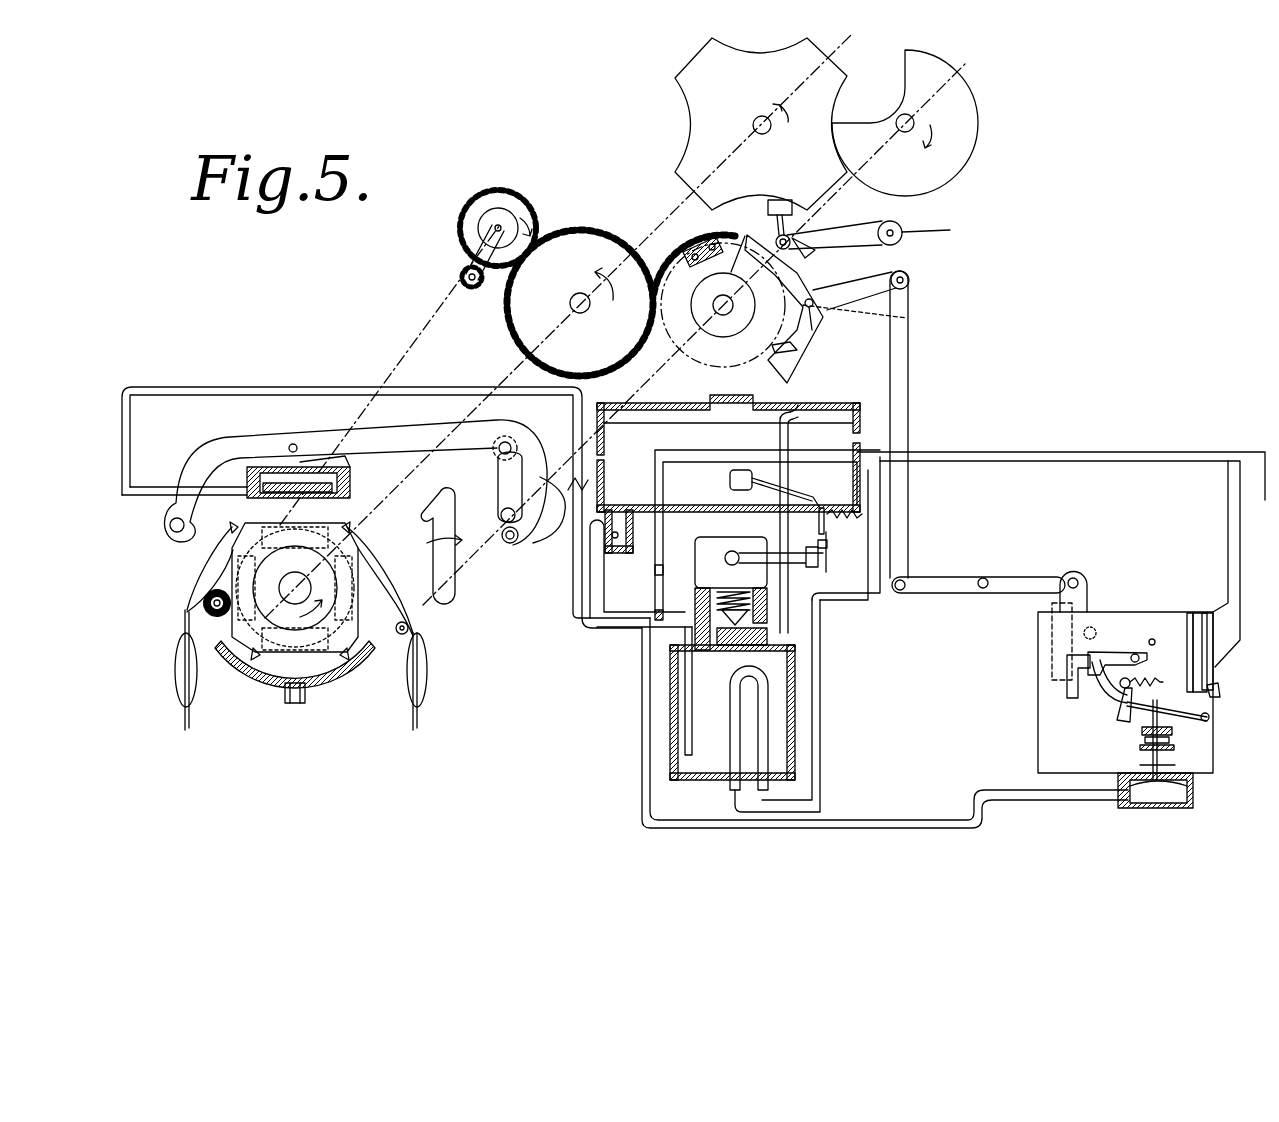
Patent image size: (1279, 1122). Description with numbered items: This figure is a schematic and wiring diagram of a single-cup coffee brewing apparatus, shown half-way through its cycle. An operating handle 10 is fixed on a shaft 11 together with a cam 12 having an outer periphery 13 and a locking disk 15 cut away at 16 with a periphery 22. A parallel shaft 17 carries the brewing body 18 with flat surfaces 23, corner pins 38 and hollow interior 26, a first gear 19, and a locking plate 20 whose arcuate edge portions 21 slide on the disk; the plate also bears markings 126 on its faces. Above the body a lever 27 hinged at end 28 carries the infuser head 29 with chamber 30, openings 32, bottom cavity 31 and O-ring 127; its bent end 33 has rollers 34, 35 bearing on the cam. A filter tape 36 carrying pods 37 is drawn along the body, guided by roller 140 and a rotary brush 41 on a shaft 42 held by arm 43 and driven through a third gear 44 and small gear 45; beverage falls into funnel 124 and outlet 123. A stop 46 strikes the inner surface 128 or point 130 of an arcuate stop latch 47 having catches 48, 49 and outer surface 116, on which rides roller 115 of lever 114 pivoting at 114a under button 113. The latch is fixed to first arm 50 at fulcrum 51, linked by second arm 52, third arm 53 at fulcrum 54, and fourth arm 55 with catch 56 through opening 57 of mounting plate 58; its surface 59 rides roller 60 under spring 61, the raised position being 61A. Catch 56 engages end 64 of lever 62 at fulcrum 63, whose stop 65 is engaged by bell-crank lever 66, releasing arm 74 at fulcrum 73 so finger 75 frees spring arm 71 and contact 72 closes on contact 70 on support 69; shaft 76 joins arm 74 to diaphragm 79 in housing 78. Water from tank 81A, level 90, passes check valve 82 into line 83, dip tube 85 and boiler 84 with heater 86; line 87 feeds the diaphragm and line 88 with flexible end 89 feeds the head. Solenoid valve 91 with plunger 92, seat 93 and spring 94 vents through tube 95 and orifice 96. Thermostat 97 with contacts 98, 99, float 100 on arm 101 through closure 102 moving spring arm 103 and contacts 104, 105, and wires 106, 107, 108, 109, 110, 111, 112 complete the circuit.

The operating handle 10 is at (462, 565).
The shaft 11 is at (500, 515).
The cam 12 is at (570, 480).
The outer periphery 13 is at (568, 525).
The locking disk 15 is at (972, 130).
The cut-away portion 16 is at (903, 66).
The shaft 17 is at (506, 385).
The brewing body 18 is at (350, 608).
The circular gear 19 is at (536, 278).
The locking plate 20 is at (681, 66).
The arcuate edge portions 21 is at (760, 193).
The periphery 22 is at (982, 168).
The peripheral flat surfaces 23 is at (362, 555).
The hollow interior 26 is at (266, 573).
The lever 27 is at (218, 443).
The hinged end 28 is at (170, 532).
The infuser head 29 is at (350, 470).
The internal chamber 30 is at (270, 470).
The bottom cavity 31 is at (262, 495).
The openings 32 is at (298, 448).
The end of lever 33 is at (498, 478).
The roller 34 is at (512, 440).
The roller 35 is at (513, 545).
The tape 36 is at (420, 712).
The pods 37 is at (430, 672).
The corner pins 38 is at (245, 662).
The rotary brush 41 is at (215, 615).
The shaft 42 is at (390, 385).
The arm 43 is at (468, 235).
The third circular gear 44 is at (522, 195).
The small gear 45 is at (462, 272).
The stop 46 is at (702, 250).
The stop latch 47 is at (810, 285).
The upper catch 48 is at (792, 300).
The lower catch 49 is at (772, 347).
The first arm 50 is at (845, 298).
The fulcrum 51 is at (814, 325).
The second arm 52 is at (910, 378).
The third arm 53 is at (952, 578).
The fulcrum 54 is at (990, 580).
The fourth arm 55 is at (1087, 598).
The catch 56 is at (1066, 680).
The opening 57 is at (1070, 698).
The mounting plate 58 is at (1038, 665).
The extended part 59 is at (1095, 625).
The roller 60 is at (1097, 632).
The spring 61 is at (1152, 625).
The raised position 61A is at (1050, 623).
The lever 62 is at (1150, 655).
The fulcrum 63 is at (1153, 638).
The end of lever 64 is at (1100, 700).
The stop 65 is at (1118, 725).
The L-shaped lever 66 is at (1120, 690).
The support 69 is at (1188, 612).
The electrical contact 70 is at (1193, 670).
The spring arm 71 is at (1213, 650).
The contact 72 is at (1220, 688).
The fulcrum point 73 is at (1210, 722).
The arm 74 is at (1160, 740).
The upstanding finger 75 is at (1212, 714).
The shaft 76 is at (1177, 766).
The housing 78 is at (1195, 800).
The flexible diaphragm 79 is at (1175, 808).
The water tank 81A is at (850, 405).
The check valve 82 is at (626, 555).
The water line 83 is at (590, 585).
The water boiler 84 is at (796, 700).
The dip tube 85 is at (693, 697).
The immersion heater 86 is at (735, 738).
The second water line 87 is at (680, 825).
The third water line 88 is at (584, 398).
The flexible upper end 89 is at (195, 485).
The maximum water level 90 is at (655, 420).
The solenoid valve 91 is at (700, 542).
The plunger 92 is at (715, 605).
The valve seat 93 is at (712, 648).
The conical spring 94 is at (700, 600).
The vent tube 95 is at (779, 444).
The flow restricting orifice 96 is at (798, 408).
The bimetal thermostat switch 97 is at (653, 598).
The fixed contact 98 is at (668, 566).
The contact 99 is at (654, 575).
The float 100 is at (729, 486).
The fulcrumed arm 101 is at (823, 500).
The flexible closure 102 is at (823, 505).
The spring arm 103 is at (827, 560).
The movable contact 104 is at (828, 548).
The second fixed contact 105 is at (822, 540).
The wire 106 is at (1190, 450).
The wire 107 is at (790, 490).
The wire 108 is at (822, 660).
The wire 109 is at (1145, 462).
The wire 110 is at (1240, 525).
The wire 111 is at (742, 550).
The wire 112 is at (760, 566).
The button 113 is at (768, 208).
The lever 114 is at (852, 225).
The pivot point 114a is at (945, 227).
The roller 115 is at (779, 254).
The outer surface 116 is at (820, 285).
The tubular outlet 123 is at (292, 704).
The funnel 124 is at (355, 685).
The cam face 126 is at (834, 193).
The rubber O-ring 127 is at (350, 475).
The inner surface 128 is at (717, 257).
The lower end contact point 130 is at (790, 345).
The roller 140 is at (402, 635).